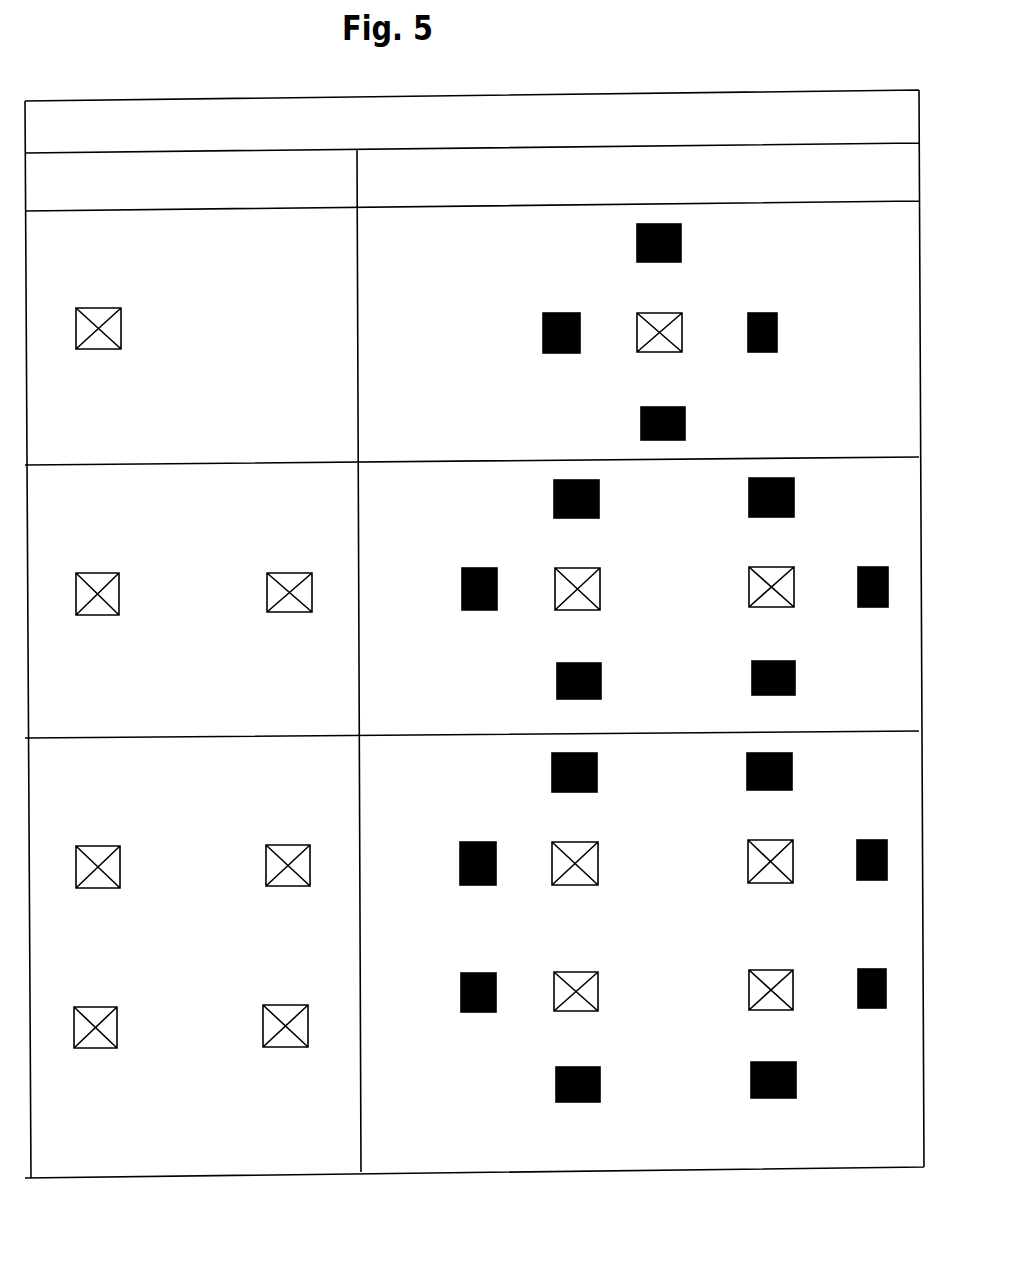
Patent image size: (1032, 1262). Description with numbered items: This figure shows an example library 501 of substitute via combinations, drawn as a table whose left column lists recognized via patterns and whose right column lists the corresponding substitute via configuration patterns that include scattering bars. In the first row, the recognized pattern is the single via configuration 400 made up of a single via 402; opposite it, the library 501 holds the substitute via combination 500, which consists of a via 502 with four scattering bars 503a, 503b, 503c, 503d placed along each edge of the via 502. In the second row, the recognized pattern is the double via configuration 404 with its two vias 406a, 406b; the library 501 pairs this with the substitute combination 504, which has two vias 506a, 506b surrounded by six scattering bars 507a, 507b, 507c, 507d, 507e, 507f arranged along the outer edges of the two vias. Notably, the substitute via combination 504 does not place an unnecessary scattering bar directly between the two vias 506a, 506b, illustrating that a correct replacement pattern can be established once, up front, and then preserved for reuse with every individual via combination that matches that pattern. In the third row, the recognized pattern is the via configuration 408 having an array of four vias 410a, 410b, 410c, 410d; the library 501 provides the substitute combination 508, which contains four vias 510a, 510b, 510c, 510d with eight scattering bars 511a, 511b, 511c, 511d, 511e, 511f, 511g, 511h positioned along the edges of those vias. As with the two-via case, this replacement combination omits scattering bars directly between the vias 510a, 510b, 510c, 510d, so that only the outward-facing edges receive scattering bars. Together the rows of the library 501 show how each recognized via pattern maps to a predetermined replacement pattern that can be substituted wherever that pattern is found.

The library 501 is at (474, 634).
The single via configuration 400 is at (184, 353).
The via 402 is at (99, 308).
The substitute via combination 500 is at (628, 329).
The via 502 is at (651, 313).
The scattering bar 503a is at (681, 248).
The scattering bar 503b is at (777, 338).
The scattering bar 503c is at (542, 312).
The scattering bar 503d is at (686, 430).
The double via configuration 404 is at (180, 626).
The via 406a is at (97, 573).
The via 406b is at (287, 612).
The substitute combination 504 is at (631, 596).
The via 506a is at (557, 568).
The via 506b is at (790, 567).
The scattering bar 507a is at (599, 503).
The scattering bar 507b is at (794, 503).
The scattering bar 507c is at (487, 610).
The scattering bar 507d is at (880, 607).
The scattering bar 507e is at (557, 680).
The scattering bar 507f is at (752, 680).
The via configuration 408 is at (178, 985).
The via 410a is at (98, 846).
The via 410b is at (285, 886).
The via 410c is at (97, 1007).
The via 410d is at (285, 1047).
The substitute combination 508 is at (637, 953).
The via 510a is at (577, 842).
The via 510b is at (772, 840).
The via 510c is at (585, 1012).
The via 510d is at (780, 1010).
The scattering bar 511a is at (598, 778).
The scattering bar 511b is at (792, 777).
The scattering bar 511c is at (470, 885).
The scattering bar 511d is at (875, 880).
The scattering bar 511e is at (488, 1012).
The scattering bar 511f is at (860, 1010).
The scattering bar 511g is at (583, 1102).
The scattering bar 511h is at (780, 1098).